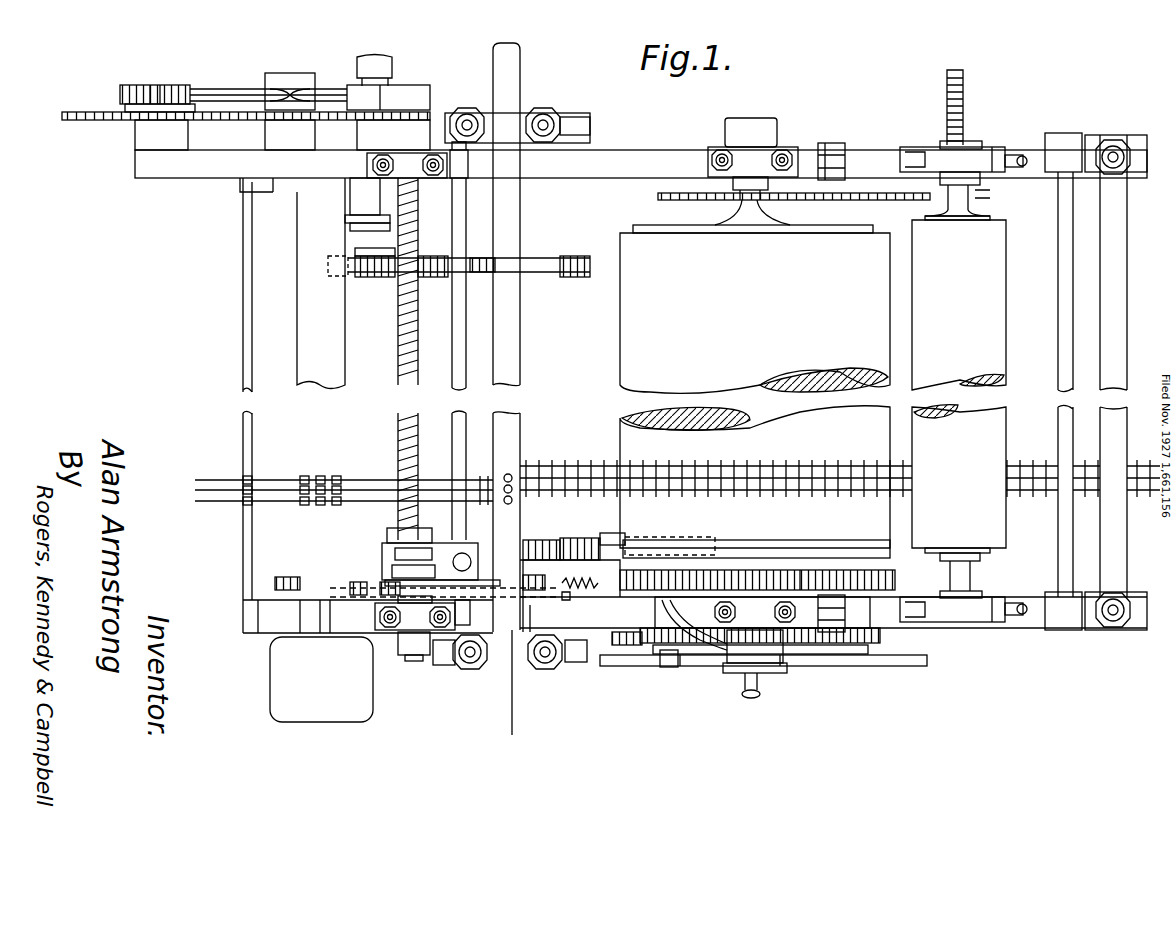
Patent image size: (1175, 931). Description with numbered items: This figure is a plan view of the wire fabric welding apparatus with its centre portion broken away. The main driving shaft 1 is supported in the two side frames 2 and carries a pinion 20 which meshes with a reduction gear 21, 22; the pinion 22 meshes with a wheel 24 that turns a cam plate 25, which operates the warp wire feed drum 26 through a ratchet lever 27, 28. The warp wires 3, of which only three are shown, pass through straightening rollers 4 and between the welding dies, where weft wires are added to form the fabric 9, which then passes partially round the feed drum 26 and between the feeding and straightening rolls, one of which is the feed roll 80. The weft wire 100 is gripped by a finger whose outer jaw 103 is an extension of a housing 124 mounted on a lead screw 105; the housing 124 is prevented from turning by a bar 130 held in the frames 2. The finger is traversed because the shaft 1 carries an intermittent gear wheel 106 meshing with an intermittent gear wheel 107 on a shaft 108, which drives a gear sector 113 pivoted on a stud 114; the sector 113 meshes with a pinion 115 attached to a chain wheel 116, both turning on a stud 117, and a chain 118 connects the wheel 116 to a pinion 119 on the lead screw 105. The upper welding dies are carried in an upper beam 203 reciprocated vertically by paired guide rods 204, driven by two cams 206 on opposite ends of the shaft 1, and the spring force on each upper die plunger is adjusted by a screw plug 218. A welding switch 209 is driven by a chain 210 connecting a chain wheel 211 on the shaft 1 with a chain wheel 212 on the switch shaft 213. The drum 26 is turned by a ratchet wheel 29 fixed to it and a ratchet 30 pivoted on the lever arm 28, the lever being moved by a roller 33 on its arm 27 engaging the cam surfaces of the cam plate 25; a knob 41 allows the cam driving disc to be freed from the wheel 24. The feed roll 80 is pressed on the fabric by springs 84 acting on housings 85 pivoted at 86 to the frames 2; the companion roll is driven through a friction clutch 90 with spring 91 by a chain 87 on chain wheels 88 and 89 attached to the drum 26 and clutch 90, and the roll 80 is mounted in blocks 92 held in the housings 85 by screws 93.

The main driving shaft 1 is at (514, 63).
The side frames 2 is at (654, 158).
The warp wires 3 is at (225, 490).
The straightening rollers 4 is at (336, 476).
The fabric 9 is at (665, 470).
The pinion 20 is at (530, 540).
The reduction gear 21 is at (598, 542).
The pinion 22 is at (638, 645).
The wheel 24 is at (870, 635).
The cam plate 25 is at (880, 666).
The feed drum 26 is at (755, 390).
The ratchet lever arm 27 is at (690, 650).
The lever arm 28 is at (732, 663).
The ratchet wheel 29 is at (820, 578).
The ratchet 30 is at (660, 570).
The roller 33 is at (682, 667).
The knob 41 is at (762, 690).
The feed roll 80 is at (959, 384).
The springs 84 is at (1028, 160).
The housings 85 is at (982, 150).
The pivot 86 is at (832, 143).
The chain 87 is at (868, 192).
The chain wheel 88 is at (658, 196).
The chain wheel 89 is at (990, 193).
The clutch 90 is at (988, 215).
The spring 91 is at (968, 95).
The blocks 92 is at (940, 143).
The screws 93 is at (1014, 155).
The weft wire 100 is at (512, 712).
The finger outer jaw 103 is at (540, 565).
The lead screw 105 is at (403, 416).
The intermittent gear wheel 106 is at (572, 258).
The intermittent gear wheel 107 is at (378, 272).
The shaft 108 is at (362, 212).
The gear sector 113 is at (140, 85).
The stud 114 is at (292, 80).
The pinion 115 is at (165, 85).
The chain wheel 116 is at (72, 112).
The stud 117 is at (150, 110).
The chain 118 is at (232, 110).
The pinion 119 is at (433, 110).
The housing 124 is at (387, 553).
The bar 130 is at (464, 386).
The upper beam 203 is at (515, 410).
The guide rods 204 is at (548, 100).
The cams 206 is at (585, 118).
The welding switch 209 is at (270, 690).
The chain 210 is at (362, 580).
The chain wheel 211 is at (530, 584).
The chain wheel 212 is at (270, 582).
The switch shaft 213 is at (312, 615).
The screw plug 218 is at (514, 486).